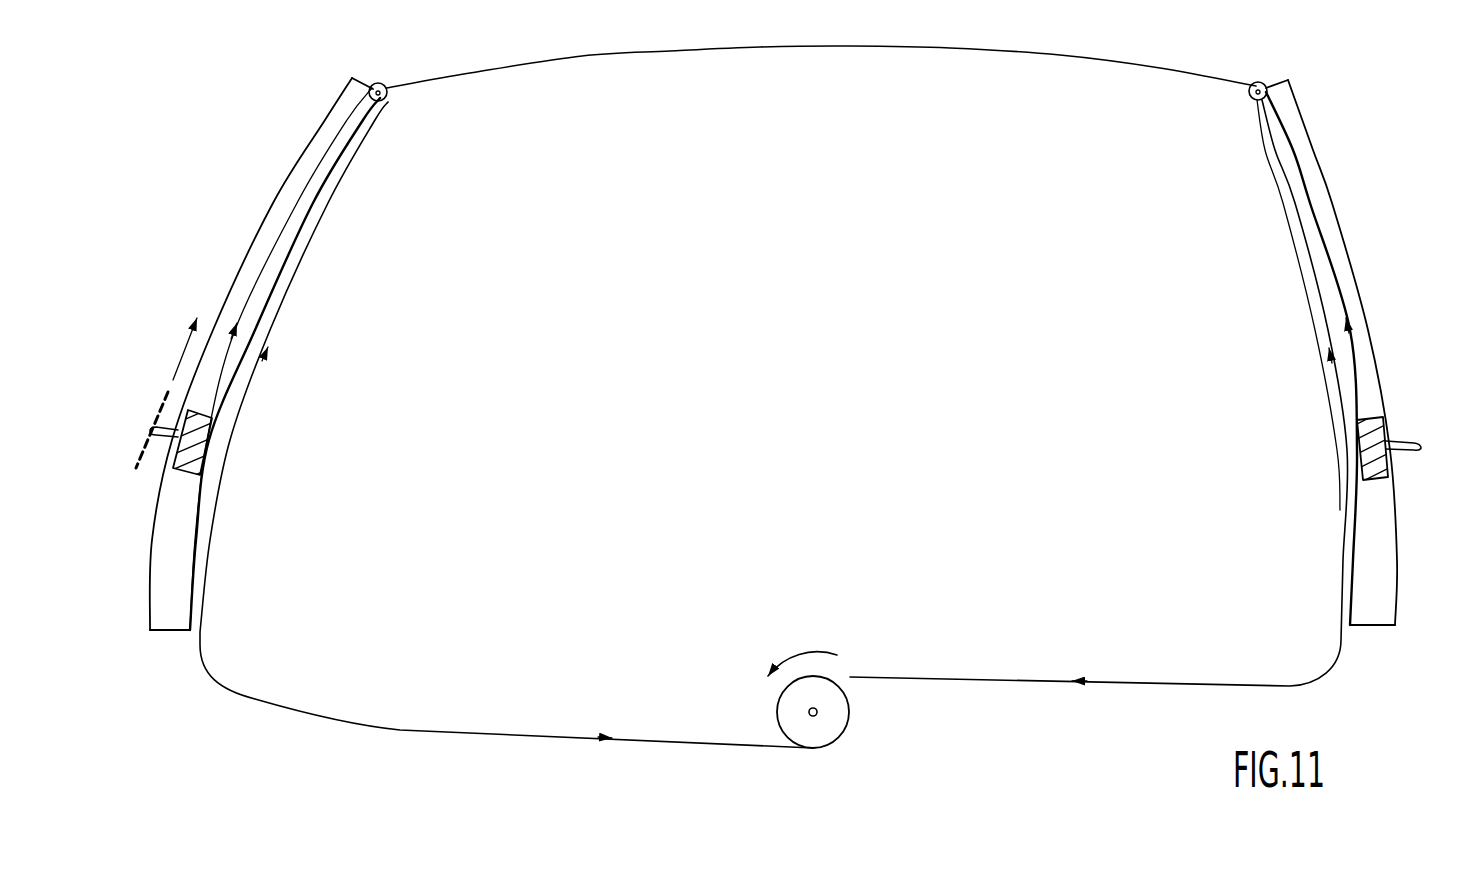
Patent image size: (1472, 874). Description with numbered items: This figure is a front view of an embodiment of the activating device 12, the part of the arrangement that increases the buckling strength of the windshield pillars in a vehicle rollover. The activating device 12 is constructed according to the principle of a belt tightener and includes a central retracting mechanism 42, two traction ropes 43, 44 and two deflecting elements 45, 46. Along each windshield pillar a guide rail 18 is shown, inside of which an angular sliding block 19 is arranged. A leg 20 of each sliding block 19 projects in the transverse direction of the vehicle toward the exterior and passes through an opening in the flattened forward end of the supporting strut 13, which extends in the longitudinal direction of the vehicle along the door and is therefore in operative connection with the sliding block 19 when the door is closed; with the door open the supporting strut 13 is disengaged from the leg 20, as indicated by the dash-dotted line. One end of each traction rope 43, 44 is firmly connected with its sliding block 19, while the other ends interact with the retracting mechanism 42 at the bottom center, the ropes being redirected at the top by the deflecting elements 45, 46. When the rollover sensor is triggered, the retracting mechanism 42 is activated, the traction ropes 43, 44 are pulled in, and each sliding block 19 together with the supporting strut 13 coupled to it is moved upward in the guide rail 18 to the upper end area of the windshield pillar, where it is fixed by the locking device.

The activating device 12 is at (893, 722).
The supporting strut 13 is at (140, 472).
The guide rail 18 is at (144, 573).
The sliding block 19 is at (212, 428).
The leg 20 is at (148, 428).
The retracting mechanism 42 is at (828, 754).
The traction rope 43 is at (1173, 682).
The traction rope 44 is at (398, 728).
The deflecting element 45 is at (1255, 83).
The deflecting element 46 is at (388, 98).